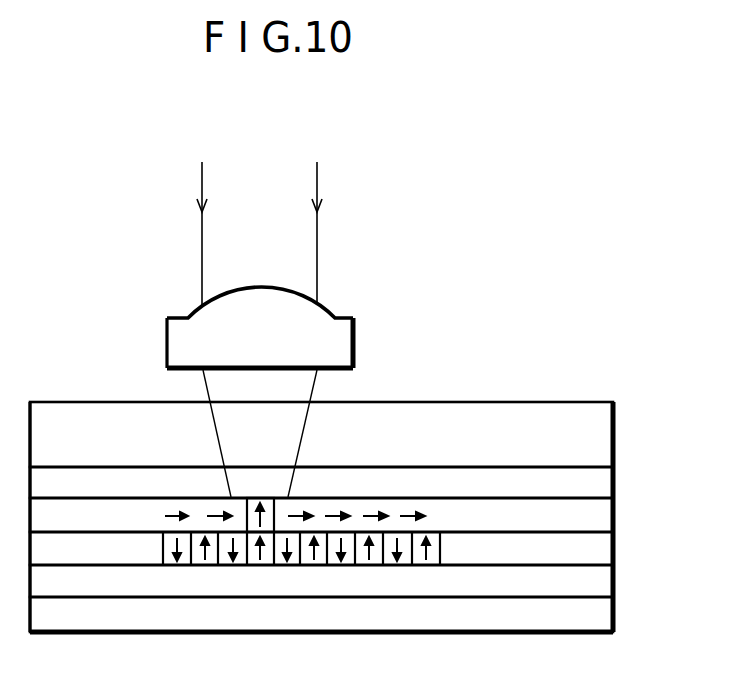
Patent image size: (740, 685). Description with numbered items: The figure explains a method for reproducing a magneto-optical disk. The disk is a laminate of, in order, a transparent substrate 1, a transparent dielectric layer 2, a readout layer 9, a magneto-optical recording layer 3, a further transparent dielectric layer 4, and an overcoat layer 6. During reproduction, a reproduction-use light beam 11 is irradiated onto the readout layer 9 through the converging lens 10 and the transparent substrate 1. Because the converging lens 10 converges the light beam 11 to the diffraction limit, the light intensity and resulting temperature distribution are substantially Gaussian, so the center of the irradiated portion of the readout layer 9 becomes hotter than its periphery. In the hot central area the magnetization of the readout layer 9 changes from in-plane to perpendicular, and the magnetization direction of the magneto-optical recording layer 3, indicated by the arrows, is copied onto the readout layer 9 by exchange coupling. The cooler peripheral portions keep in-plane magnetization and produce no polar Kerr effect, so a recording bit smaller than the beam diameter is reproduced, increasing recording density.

The transparent substrate 1 is at (598, 443).
The transparent dielectric layer 2 is at (595, 488).
The readout layer 9 is at (595, 522).
The magneto-optical recording layer 3 is at (596, 553).
The transparent dielectric layer 4 is at (593, 587).
The overcoat layer 6 is at (598, 618).
The converging lens 10 is at (340, 347).
The reproduction-use light beam 11 is at (318, 262).